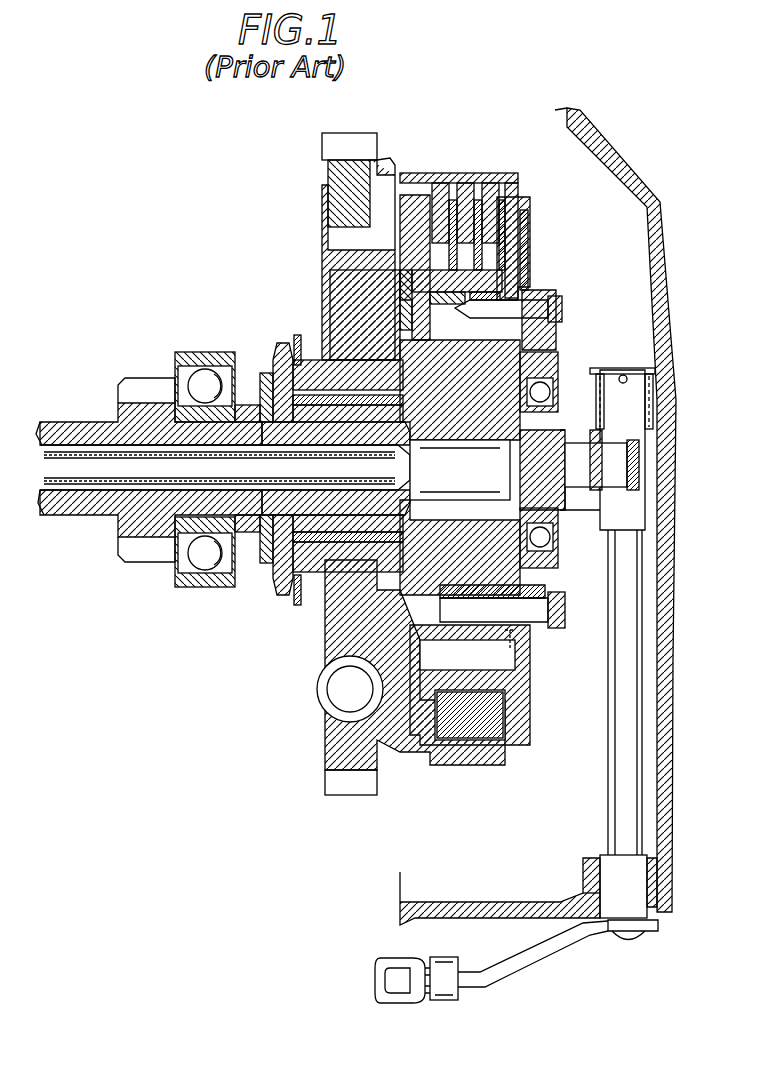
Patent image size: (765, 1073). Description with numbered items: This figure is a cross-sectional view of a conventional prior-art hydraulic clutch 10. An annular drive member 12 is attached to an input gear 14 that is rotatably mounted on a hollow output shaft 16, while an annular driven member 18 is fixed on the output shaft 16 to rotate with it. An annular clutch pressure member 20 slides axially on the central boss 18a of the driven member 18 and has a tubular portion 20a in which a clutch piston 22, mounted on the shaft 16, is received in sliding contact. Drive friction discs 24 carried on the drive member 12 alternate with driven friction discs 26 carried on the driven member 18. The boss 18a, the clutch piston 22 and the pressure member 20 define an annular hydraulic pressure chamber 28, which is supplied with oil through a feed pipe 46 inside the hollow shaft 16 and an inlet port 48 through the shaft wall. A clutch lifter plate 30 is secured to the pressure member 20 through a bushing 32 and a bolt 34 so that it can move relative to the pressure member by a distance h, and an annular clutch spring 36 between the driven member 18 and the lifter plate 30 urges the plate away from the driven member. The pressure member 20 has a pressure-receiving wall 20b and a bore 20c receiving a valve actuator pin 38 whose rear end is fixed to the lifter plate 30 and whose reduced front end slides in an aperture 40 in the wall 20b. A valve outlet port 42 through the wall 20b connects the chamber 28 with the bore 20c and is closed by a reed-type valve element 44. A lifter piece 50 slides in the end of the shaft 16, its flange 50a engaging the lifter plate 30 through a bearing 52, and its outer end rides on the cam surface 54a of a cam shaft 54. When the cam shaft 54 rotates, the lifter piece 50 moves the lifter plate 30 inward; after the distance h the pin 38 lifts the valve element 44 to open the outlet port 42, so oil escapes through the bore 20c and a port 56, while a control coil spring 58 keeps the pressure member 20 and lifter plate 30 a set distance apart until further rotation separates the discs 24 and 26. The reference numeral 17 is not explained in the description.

The hydraulic clutch 10 is at (178, 284).
The annular drive member 12 is at (395, 162).
The input gear 14 is at (352, 795).
The hollow output shaft 16 is at (88, 516).
The release arm 17 is at (640, 455).
The annular driven member 18 is at (515, 196).
The central boss 18a is at (456, 385).
The clutch pressure member 20 is at (418, 200).
The tubular portion 20a is at (400, 278).
The pressure-receiving wall 20b is at (330, 333).
The bore 20c is at (500, 295).
The clutch piston 22 is at (380, 310).
The drive friction discs 24 is at (445, 182).
The driven friction discs 26 is at (470, 182).
The annular hydraulic pressure chamber 28 is at (378, 292).
The clutch lifter plate 30 is at (550, 372).
The bushing 32 is at (556, 624).
The bolt 34 is at (565, 614).
The annular clutch spring 36 is at (487, 290).
The valve actuator pin 38 is at (562, 309).
The aperture 40 is at (545, 326).
The valve outlet port 42 is at (522, 272).
The valve element 44 is at (322, 336).
The feed pipe 46 is at (50, 490).
The inlet port 48 is at (410, 448).
The lifter piece 50 is at (560, 440).
The flange 50a is at (565, 430).
The bearing 52 is at (556, 545).
The cam shaft 54 is at (632, 716).
The cam surface 54a is at (635, 470).
The port 56 is at (540, 299).
The control coil spring 58 is at (515, 727).
The distance h is at (512, 630).